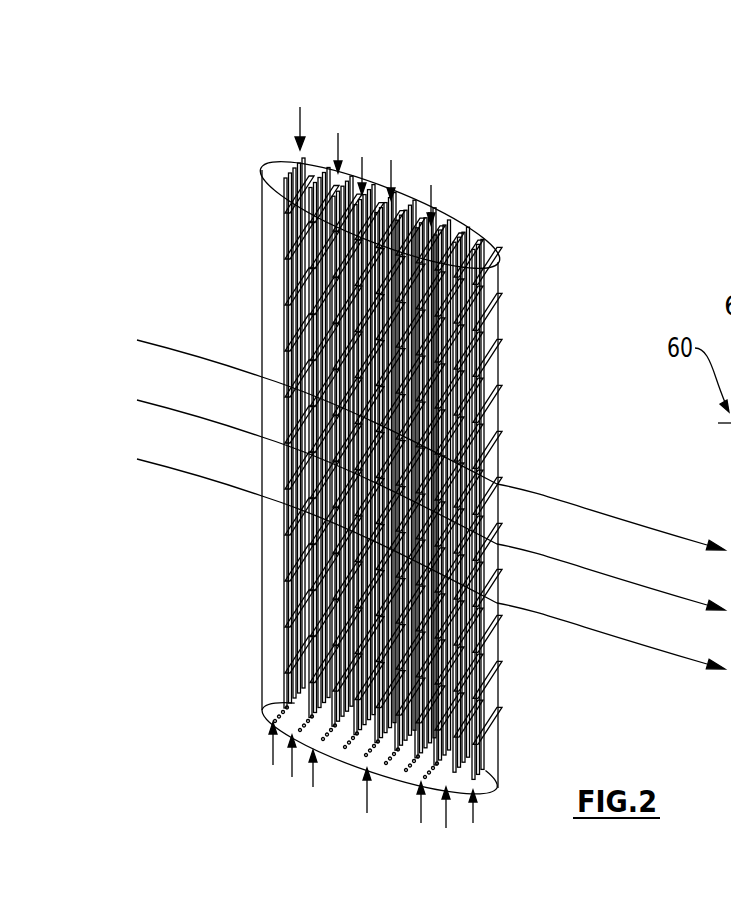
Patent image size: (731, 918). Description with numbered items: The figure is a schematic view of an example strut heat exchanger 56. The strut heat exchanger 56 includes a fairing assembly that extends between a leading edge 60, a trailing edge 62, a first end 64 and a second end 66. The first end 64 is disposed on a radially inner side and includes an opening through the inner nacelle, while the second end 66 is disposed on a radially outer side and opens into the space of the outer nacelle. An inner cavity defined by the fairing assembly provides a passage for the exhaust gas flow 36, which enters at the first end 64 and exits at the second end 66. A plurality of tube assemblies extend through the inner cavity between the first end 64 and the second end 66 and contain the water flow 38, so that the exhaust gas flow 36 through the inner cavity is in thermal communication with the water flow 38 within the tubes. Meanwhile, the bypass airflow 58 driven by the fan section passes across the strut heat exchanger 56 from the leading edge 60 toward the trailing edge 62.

The exhaust gas flow 36 is at (325, 82).
The water flow 38 is at (488, 852).
The strut heat exchanger 56 is at (186, 203).
The bypass airflow 58 is at (100, 468).
The leading edge 60 is at (250, 152).
The trailing edge 62 is at (507, 269).
The first end 64 is at (300, 107).
The second end 66 is at (249, 718).